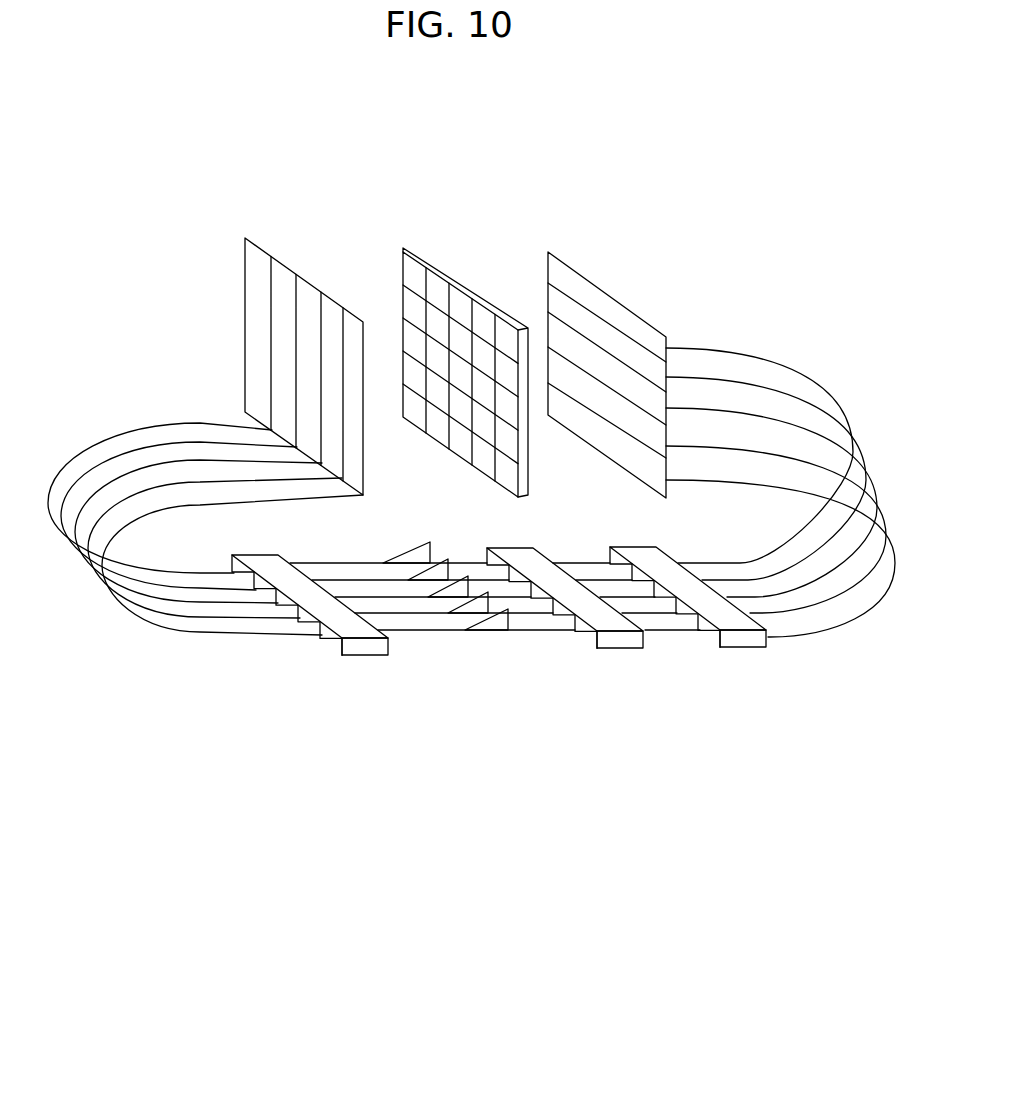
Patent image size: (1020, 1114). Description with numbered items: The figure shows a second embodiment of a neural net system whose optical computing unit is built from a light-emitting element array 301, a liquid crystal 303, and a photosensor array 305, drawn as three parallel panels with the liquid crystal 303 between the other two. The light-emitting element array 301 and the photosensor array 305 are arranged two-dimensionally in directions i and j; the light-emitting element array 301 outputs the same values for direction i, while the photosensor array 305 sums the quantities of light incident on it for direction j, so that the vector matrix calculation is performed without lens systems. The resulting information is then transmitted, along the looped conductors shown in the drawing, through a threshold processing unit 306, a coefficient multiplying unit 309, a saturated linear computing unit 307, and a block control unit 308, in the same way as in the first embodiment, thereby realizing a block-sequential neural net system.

The light-emitting element array 301 is at (245, 236).
The liquid crystal 303 is at (405, 248).
The photosensor array 305 is at (612, 290).
The threshold processing unit 306 is at (738, 653).
The saturated linear computing unit 307 is at (490, 650).
The block control unit 308 is at (360, 660).
The coefficient multiplying unit 309 is at (618, 653).